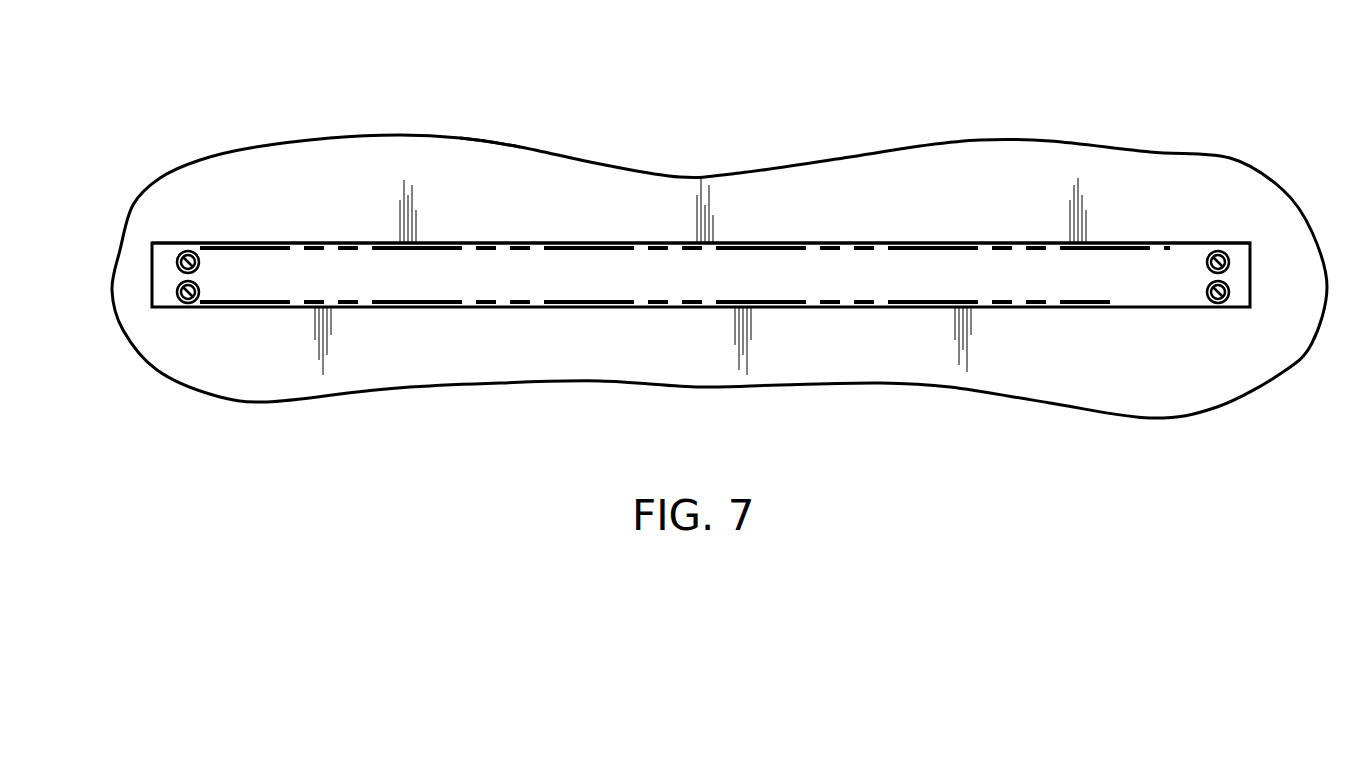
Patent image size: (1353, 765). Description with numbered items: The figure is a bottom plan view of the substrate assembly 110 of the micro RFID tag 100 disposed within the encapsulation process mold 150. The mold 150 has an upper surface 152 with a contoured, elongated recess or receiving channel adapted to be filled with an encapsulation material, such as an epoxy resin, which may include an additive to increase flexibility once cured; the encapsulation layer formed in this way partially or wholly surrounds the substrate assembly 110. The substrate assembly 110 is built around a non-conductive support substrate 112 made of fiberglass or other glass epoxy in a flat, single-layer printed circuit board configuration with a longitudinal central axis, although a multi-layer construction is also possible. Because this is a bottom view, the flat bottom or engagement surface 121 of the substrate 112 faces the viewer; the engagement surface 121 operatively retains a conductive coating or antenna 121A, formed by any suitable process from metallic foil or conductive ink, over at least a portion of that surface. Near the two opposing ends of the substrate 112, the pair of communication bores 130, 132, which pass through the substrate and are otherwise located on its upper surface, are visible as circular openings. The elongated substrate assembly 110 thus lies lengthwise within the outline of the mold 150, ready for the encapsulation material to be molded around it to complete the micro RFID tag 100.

The micro RFID tag 100 is at (818, 332).
The substrate assembly 110 is at (1025, 228).
The support substrate 112 is at (885, 243).
The engagement surface 121 is at (1122, 247).
The antenna 121A is at (1122, 283).
The communication bore 130 is at (199, 300).
The communication bore 132 is at (1229, 258).
The mold 150 is at (134, 193).
The upper surface 152 is at (492, 146).